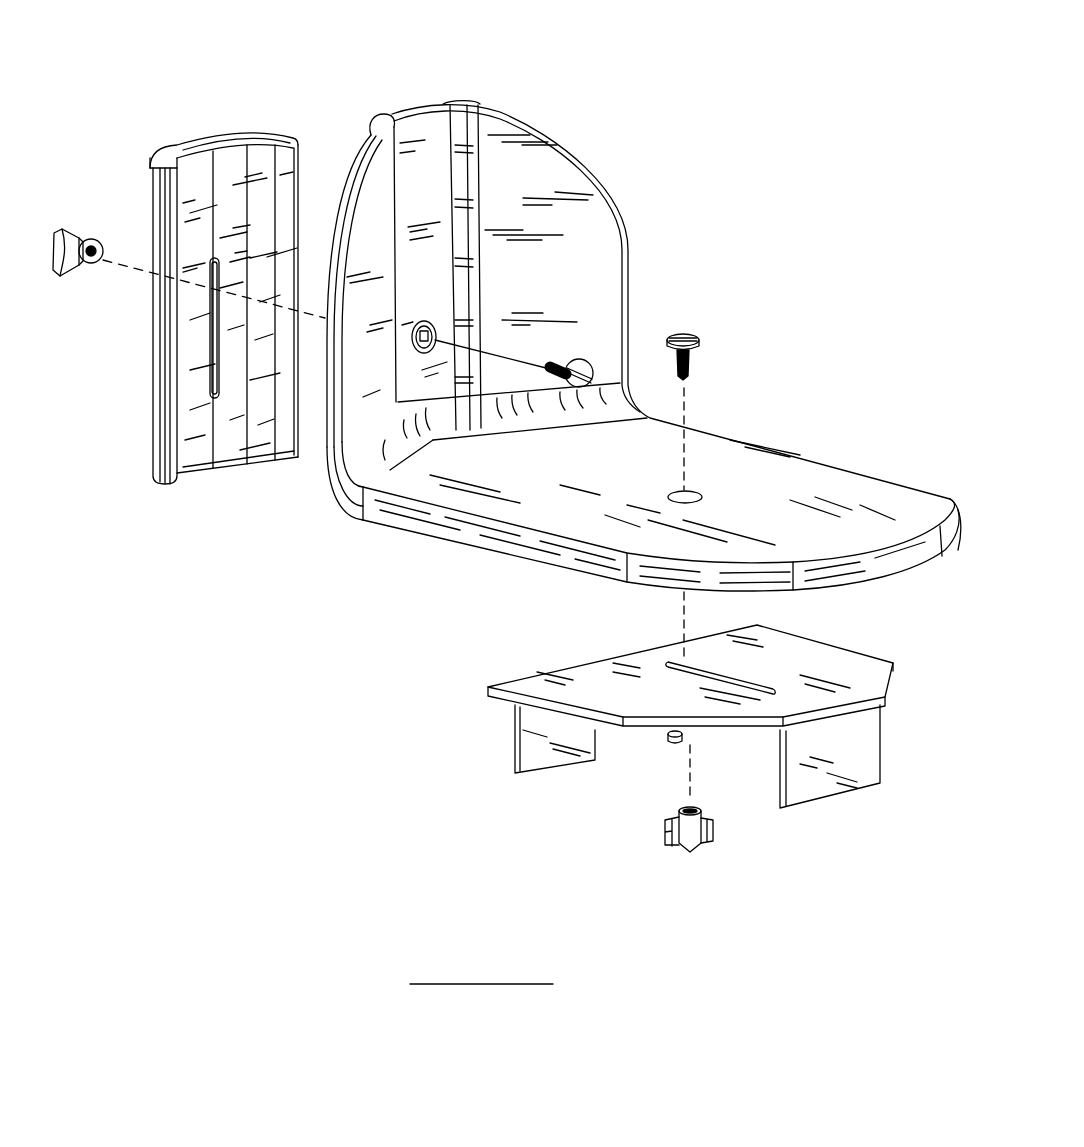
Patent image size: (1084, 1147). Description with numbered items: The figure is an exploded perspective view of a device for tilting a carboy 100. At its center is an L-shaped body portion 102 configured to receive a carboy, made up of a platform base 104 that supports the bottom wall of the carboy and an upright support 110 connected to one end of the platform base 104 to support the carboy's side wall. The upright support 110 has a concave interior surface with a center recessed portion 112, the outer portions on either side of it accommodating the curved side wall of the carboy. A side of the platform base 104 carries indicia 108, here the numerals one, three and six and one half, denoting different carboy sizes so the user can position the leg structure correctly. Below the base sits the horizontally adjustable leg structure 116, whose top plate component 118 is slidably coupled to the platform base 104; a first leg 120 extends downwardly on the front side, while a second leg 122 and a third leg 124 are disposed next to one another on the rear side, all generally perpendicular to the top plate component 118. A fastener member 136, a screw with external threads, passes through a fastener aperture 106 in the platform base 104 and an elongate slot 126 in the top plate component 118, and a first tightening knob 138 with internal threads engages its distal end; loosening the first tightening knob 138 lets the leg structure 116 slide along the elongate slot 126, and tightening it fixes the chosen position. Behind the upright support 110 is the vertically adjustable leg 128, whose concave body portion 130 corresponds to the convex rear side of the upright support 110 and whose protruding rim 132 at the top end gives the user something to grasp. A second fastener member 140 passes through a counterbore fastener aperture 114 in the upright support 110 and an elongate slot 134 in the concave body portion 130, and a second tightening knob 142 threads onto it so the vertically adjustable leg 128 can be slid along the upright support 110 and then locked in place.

The device for tilting a carboy 100 is at (346, 790).
The L-shaped body portion 102 is at (612, 180).
The platform base 104 is at (785, 497).
The fastener aperture 106 is at (687, 497).
The indicia 108 is at (494, 552).
The upright support 110 is at (518, 173).
The center recessed portion 112 is at (423, 138).
The counterbore fastener aperture 114 is at (429, 322).
The horizontally adjustable leg structure 116 is at (606, 656).
The top plate component 118 is at (572, 680).
The first leg 120 is at (832, 773).
The second leg 122 is at (538, 740).
The third leg 124 is at (675, 737).
The elongate slot 126 is at (716, 668).
The vertically adjustable leg 128 is at (162, 413).
The concave body portion 130 is at (282, 147).
The protruding rim 132 is at (186, 147).
The elongate slot 134 is at (214, 369).
The fastener member 136 is at (683, 330).
The first tightening knob 138 is at (712, 832).
The fastener member 140 is at (583, 358).
The second tightening knob 142 is at (106, 238).